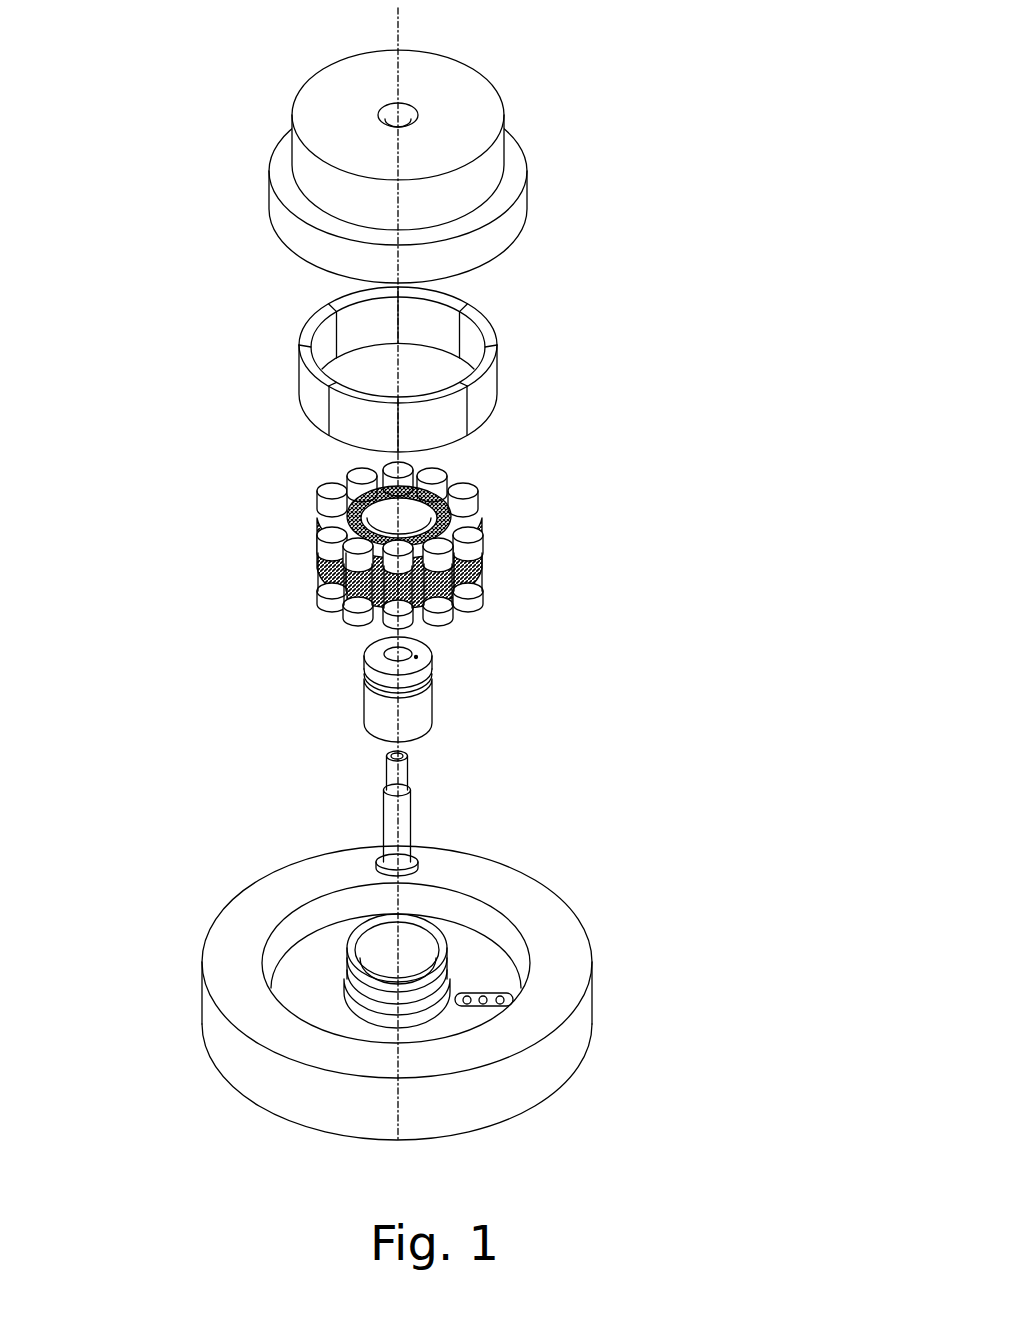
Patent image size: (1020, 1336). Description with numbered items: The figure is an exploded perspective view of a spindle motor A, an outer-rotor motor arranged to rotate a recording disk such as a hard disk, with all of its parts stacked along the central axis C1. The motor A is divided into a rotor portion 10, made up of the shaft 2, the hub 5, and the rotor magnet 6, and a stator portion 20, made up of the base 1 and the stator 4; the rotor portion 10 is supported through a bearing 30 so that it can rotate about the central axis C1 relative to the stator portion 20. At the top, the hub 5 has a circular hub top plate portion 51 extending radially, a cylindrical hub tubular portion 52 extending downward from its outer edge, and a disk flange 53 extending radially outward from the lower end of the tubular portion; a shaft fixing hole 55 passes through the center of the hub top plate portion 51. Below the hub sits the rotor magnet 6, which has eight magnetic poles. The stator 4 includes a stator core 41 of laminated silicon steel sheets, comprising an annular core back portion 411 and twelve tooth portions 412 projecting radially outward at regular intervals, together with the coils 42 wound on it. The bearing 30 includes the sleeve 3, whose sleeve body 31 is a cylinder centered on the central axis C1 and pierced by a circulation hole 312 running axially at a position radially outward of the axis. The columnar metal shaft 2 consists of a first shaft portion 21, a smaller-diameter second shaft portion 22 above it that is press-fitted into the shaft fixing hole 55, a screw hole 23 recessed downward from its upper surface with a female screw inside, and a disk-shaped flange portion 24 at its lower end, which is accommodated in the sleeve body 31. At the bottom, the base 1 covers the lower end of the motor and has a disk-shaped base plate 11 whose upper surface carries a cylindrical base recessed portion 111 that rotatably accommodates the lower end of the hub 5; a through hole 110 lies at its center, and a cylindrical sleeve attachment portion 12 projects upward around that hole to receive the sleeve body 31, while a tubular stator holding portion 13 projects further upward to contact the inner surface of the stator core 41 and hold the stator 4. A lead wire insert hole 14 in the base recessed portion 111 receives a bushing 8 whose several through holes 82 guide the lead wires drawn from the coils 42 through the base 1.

The motor A is at (143, 103).
The central axis C1 is at (400, 23).
The base 1 is at (393, 909).
The shaft 2 is at (534, 612).
The sleeve 3 is at (406, 683).
The stator 4 is at (357, 545).
The hub 5 is at (468, 156).
The rotor magnet 6 is at (497, 353).
The bushing 8 is at (551, 1016).
The rotor portion 10 is at (742, 285).
The base plate 11 is at (513, 983).
The sleeve attachment portion 12 is at (358, 963).
The stator holding portion 13 is at (362, 940).
The lead wire insert hole 14 is at (480, 1013).
The stator portion 20 is at (130, 592).
The first shaft portion 21 is at (390, 815).
The second shaft portion 22 is at (385, 778).
The screw hole 23 is at (405, 757).
The flange portion 24 is at (420, 860).
The bearing 30 is at (428, 700).
The sleeve body 31 is at (368, 652).
The stator core 41 is at (447, 545).
The coils 42 is at (483, 540).
The hub top plate portion 51 is at (452, 85).
The hub tubular portion 52 is at (495, 150).
The disk flange 53 is at (290, 197).
The shaft fixing hole 55 is at (387, 108).
The through holes 82 is at (513, 999).
The through hole 110 is at (410, 968).
The base recessed portion 111 is at (320, 1015).
The circulation hole 312 is at (416, 656).
The core back portion 411 is at (470, 494).
The tooth portions 412 is at (480, 525).